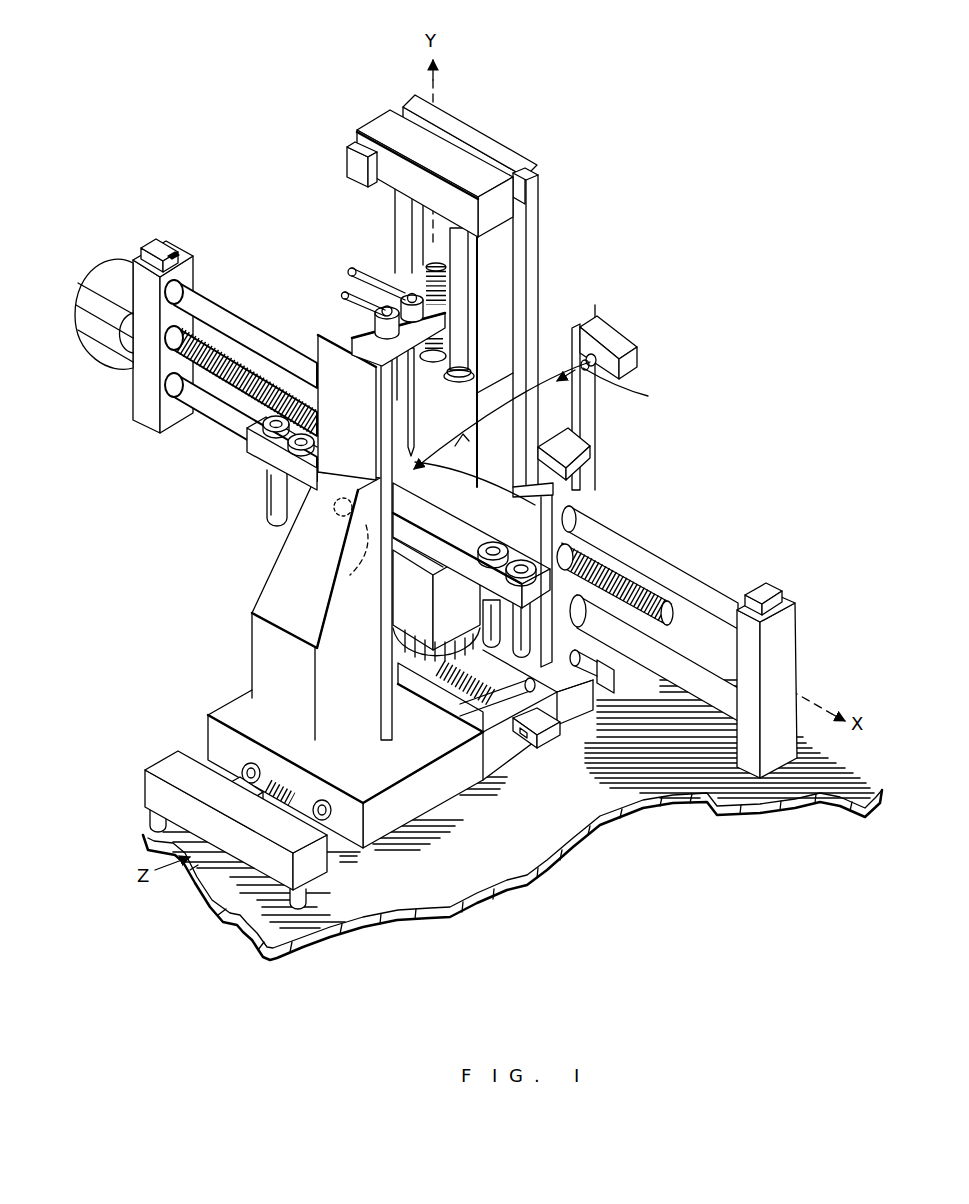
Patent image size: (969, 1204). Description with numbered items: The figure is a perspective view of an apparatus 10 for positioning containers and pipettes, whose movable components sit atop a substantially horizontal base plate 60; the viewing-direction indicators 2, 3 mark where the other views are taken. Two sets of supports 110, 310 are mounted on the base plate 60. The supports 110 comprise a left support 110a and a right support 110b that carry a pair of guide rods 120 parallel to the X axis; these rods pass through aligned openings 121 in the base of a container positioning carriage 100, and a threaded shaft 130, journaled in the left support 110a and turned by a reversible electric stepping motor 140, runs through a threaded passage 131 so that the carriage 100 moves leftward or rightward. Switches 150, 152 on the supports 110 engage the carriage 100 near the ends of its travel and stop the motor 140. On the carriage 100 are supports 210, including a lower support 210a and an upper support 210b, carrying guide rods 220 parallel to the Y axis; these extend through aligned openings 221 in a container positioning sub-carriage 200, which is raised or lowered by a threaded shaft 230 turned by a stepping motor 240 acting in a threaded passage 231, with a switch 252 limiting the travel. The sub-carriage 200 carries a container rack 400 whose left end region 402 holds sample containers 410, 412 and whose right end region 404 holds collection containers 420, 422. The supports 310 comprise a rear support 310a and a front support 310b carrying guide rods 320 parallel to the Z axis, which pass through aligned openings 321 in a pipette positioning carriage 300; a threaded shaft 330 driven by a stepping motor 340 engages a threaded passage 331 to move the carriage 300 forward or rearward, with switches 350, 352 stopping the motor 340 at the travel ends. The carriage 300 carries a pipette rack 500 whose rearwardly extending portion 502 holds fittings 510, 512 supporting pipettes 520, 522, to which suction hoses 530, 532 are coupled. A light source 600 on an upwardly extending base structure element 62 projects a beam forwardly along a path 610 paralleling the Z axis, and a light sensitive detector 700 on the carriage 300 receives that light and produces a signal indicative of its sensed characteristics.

The section line 2- 2 is at (647, 250).
The section line 3- 3 is at (387, 133).
The apparatus 10 is at (250, 88).
The base plate 60 is at (478, 893).
The base structure element 62 is at (597, 443).
The container positioning carriage 100 is at (668, 601).
The supports 110 is at (448, 502).
The left support 110a is at (186, 268).
The right support 110b is at (800, 622).
The guide rods 120 is at (678, 663).
The aligned openings 121 is at (597, 501).
The threaded shaft 130 is at (200, 332).
The threaded passage 131 is at (600, 560).
The reversible electric stepping motor 140 is at (97, 332).
The switch 150 is at (167, 237).
The switch 152 is at (770, 590).
The container positioning sub-carriage 200 is at (585, 440).
The supports 210 is at (477, 450).
The lower support 210a is at (384, 622).
The upper support 210b is at (516, 200).
The guide rods 220 is at (440, 186).
The aligned openings 221 is at (471, 364).
The threaded shaft 230 is at (430, 268).
The threaded passage 231 is at (420, 350).
The reversible electric stepping motor 240 is at (474, 624).
The switch 252 is at (348, 152).
The pipette positioning carriage 300 is at (267, 568).
The supports 310 is at (569, 742).
The rear support 310a is at (588, 713).
The front support 310b is at (145, 783).
The guide rods 320 is at (493, 712).
The aligned openings 321 is at (250, 775).
The threaded shaft 330 is at (222, 703).
The threaded passage 331 is at (317, 746).
The reversible electric stepping motor 340 is at (640, 578).
The switch 350 is at (553, 750).
The switch 352 is at (246, 805).
The container rack 400 is at (562, 506).
The left end region 402 is at (247, 438).
The right end region 404 is at (553, 578).
The sample container 410 is at (247, 453).
The sample container 412 is at (267, 476).
The collection container 420 is at (506, 553).
The collection container 422 is at (532, 565).
The pipette rack 500 is at (342, 328).
The rearwardly extending portion 502 is at (442, 350).
The fitting 510 is at (347, 407).
The fitting 512 is at (445, 323).
The pipette 520 is at (474, 360).
The pipette 522 is at (576, 324).
The suction hose 530 is at (343, 296).
The suction hose 532 is at (360, 255).
The light source 600 is at (646, 350).
The beam path 610 is at (464, 524).
The light sensitive detector 700 is at (338, 574).